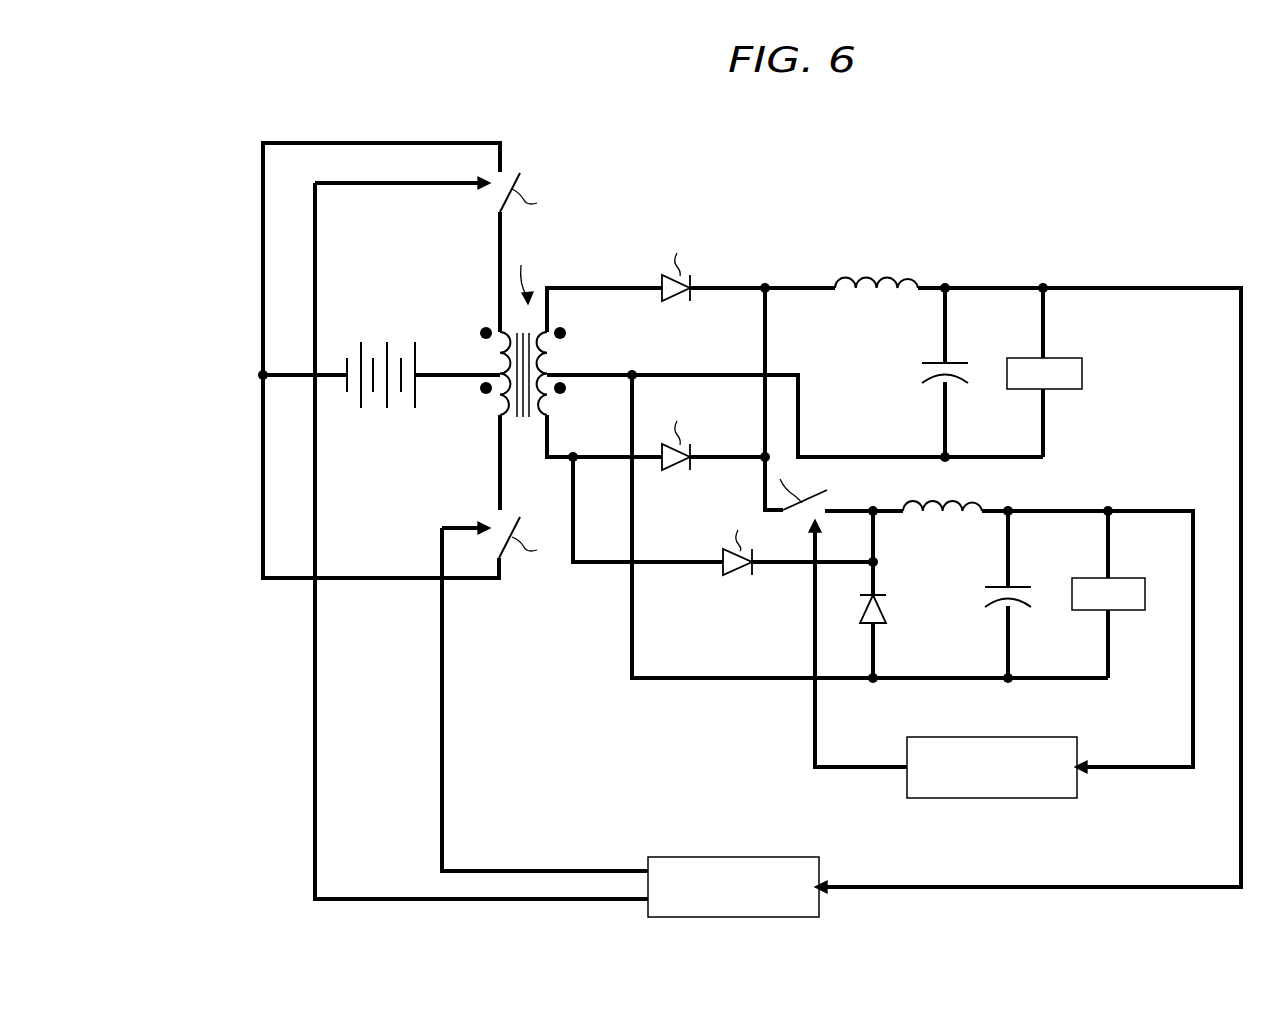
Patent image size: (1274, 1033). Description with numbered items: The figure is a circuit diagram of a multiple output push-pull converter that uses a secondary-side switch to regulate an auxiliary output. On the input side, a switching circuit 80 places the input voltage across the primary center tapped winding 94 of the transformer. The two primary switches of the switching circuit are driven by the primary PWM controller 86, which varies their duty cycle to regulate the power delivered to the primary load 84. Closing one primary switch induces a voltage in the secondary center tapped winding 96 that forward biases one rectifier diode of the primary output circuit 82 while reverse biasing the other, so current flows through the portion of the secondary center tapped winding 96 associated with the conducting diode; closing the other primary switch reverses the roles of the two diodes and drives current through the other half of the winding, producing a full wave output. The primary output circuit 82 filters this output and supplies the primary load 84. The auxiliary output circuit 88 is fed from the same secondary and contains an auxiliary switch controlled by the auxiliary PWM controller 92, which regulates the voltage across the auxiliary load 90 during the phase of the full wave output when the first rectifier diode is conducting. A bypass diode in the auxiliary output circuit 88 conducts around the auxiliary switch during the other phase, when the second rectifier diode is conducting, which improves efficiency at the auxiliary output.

The switching circuit 80 is at (222, 210).
The primary output circuit 82 is at (951, 243).
The primary load 84 is at (1082, 374).
The primary PWM controller 86 is at (735, 857).
The auxiliary output circuit 88 is at (1100, 467).
The auxiliary load 90 is at (1130, 578).
The auxiliary PWM controller 92 is at (995, 737).
The primary center tapped winding 94 is at (472, 357).
The secondary center tapped winding 96 is at (572, 357).